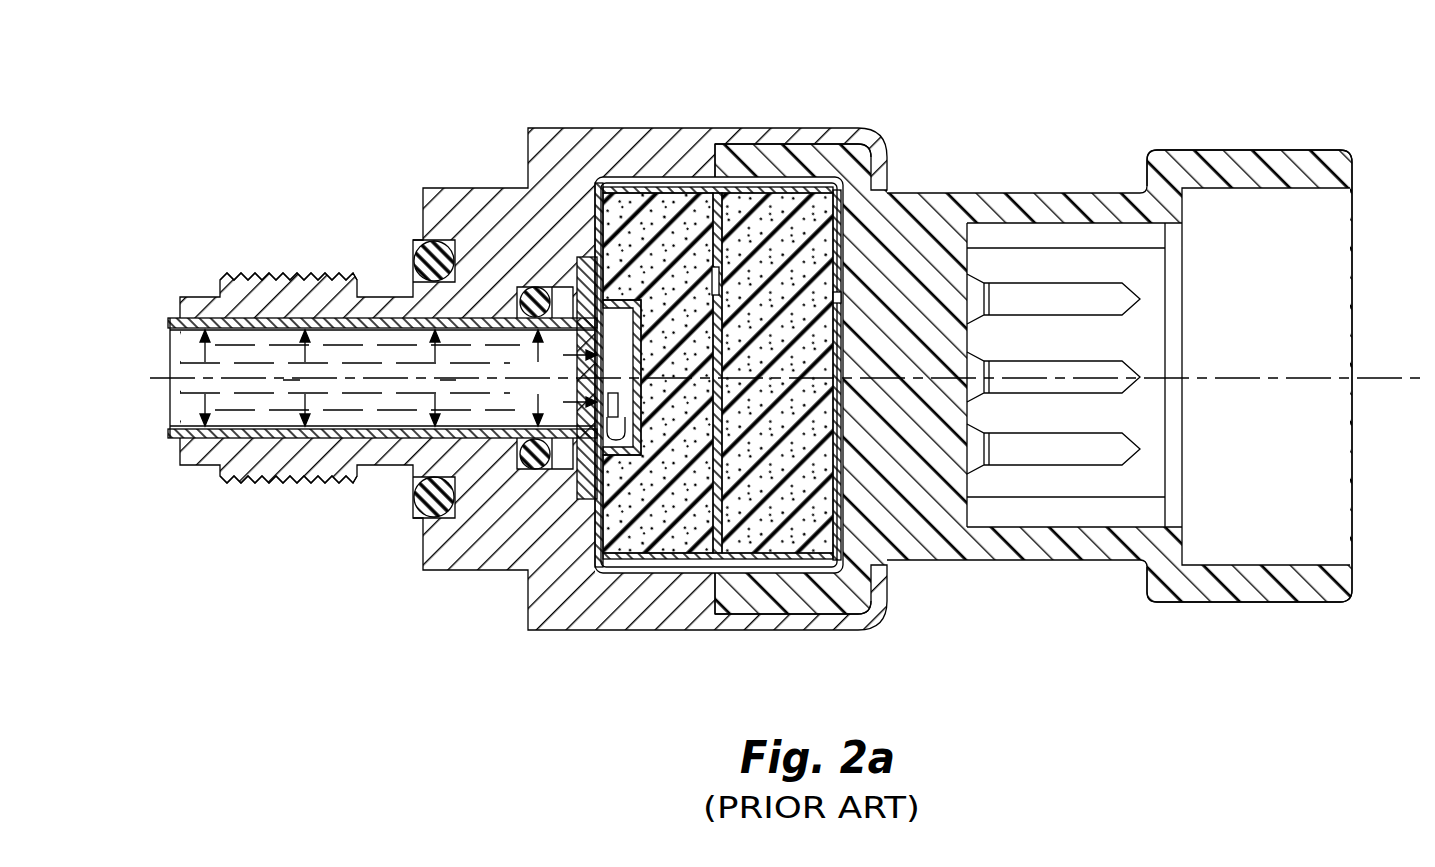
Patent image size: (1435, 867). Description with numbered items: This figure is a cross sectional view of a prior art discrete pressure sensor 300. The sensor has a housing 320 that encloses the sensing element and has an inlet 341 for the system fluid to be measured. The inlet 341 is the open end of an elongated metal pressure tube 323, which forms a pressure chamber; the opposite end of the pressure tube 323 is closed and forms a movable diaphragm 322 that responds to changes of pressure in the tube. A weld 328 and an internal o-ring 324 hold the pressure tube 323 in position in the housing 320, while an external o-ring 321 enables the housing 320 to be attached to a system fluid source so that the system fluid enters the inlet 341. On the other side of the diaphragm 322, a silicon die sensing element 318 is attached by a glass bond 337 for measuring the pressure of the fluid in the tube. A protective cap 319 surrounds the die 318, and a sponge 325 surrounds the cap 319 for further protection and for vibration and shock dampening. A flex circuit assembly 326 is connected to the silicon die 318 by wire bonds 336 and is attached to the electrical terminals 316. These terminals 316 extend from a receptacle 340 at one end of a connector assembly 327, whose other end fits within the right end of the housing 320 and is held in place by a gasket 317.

The prior art pressure sensor 300 is at (1121, 126).
The electrical terminals 316 is at (1133, 451).
The gasket 317 is at (720, 148).
The silicon die sensing element 318 is at (667, 540).
The protective cap 319 is at (668, 190).
The housing 320 is at (494, 187).
The external o-ring 321 is at (417, 245).
The movable diaphragm 322 is at (423, 466).
The pressure tube 323 is at (257, 450).
The internal o-ring 324 is at (527, 470).
The sponge 325 is at (777, 540).
The flex circuit assembly 326 is at (808, 567).
The connector assembly 327 is at (1028, 560).
The weld 328 is at (183, 438).
The wire bonds 336 is at (633, 447).
The glass bond 337 is at (601, 176).
The receptacle 340 is at (1152, 273).
The inlet 341 is at (165, 347).